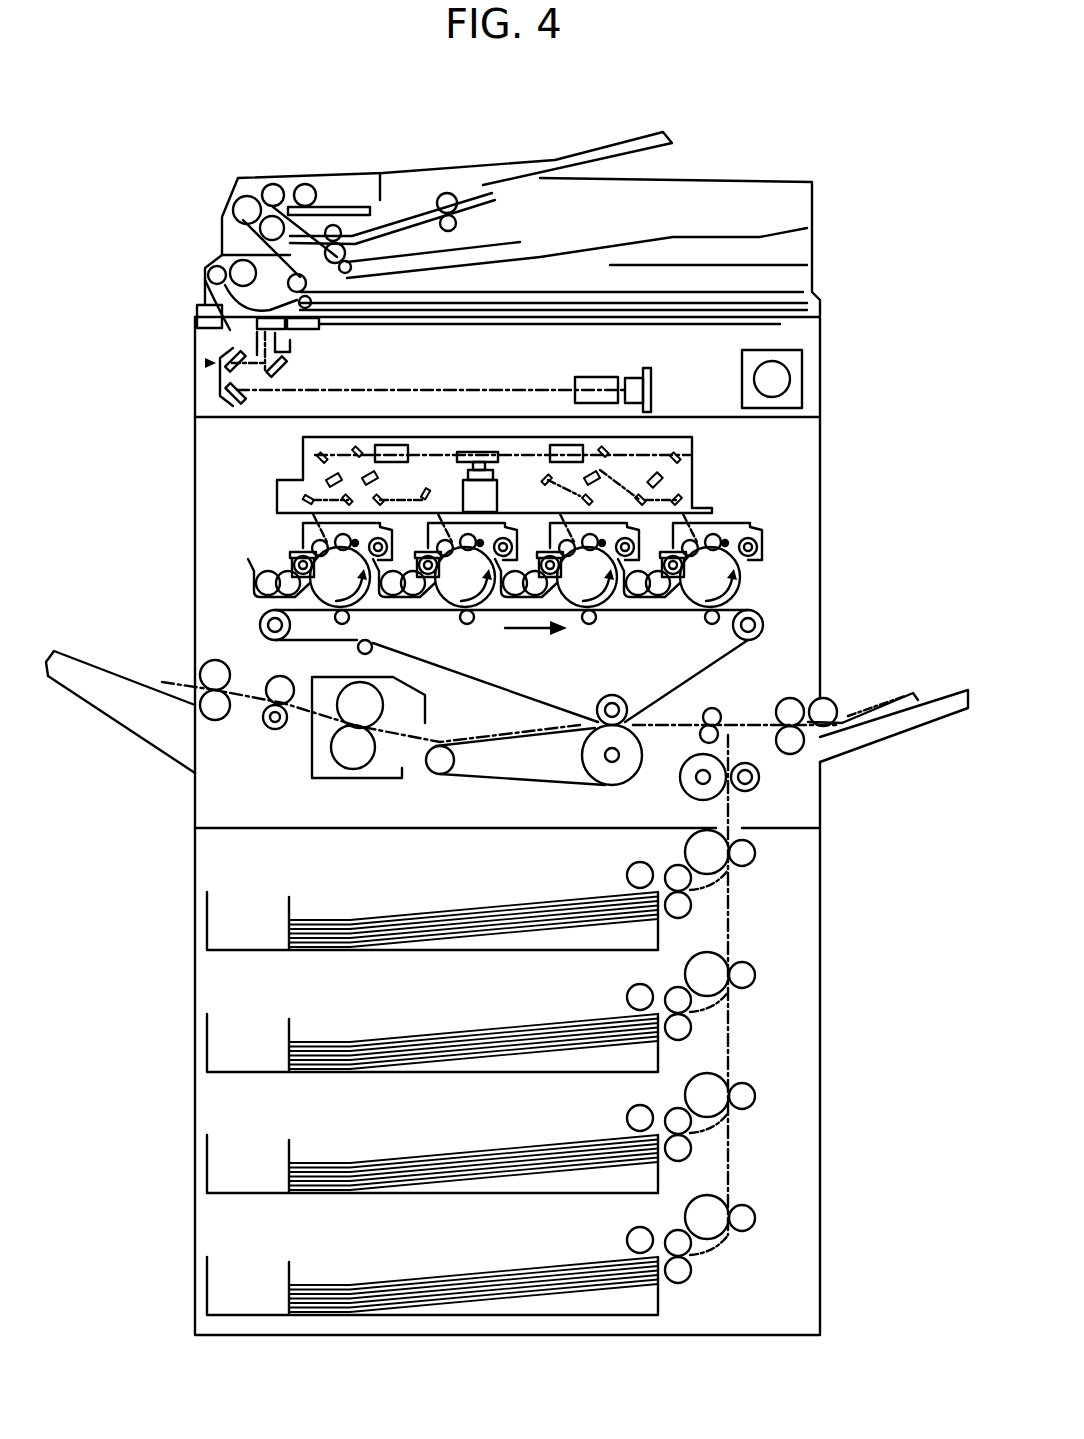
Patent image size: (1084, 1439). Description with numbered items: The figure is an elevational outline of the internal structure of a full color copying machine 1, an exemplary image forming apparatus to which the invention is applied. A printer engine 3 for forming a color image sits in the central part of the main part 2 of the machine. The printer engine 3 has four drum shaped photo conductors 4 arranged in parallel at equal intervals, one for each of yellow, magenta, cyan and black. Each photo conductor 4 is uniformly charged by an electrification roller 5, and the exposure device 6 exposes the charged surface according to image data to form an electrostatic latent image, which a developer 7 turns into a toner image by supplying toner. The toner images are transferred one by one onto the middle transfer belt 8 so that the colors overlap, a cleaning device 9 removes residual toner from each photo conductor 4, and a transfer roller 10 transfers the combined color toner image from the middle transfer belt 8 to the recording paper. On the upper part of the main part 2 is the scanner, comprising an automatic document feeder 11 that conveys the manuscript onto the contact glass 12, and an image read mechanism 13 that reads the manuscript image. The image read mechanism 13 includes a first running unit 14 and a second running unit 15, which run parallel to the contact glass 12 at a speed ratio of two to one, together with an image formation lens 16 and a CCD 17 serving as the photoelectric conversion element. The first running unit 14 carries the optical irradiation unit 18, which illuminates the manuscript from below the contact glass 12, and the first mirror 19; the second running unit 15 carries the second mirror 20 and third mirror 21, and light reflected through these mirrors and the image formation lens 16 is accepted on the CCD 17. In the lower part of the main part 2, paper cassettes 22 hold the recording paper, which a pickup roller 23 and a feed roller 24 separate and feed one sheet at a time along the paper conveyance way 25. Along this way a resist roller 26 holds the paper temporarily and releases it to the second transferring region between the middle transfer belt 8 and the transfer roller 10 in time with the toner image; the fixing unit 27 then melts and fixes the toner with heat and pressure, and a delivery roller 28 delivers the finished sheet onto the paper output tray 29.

The full color copying machine 1 is at (783, 114).
The main part 2 is at (195, 505).
The printer engine 3 is at (757, 596).
The photo conductor 4 is at (496, 584).
The electrification roller 5 is at (310, 535).
The exposure device 6 is at (695, 468).
The developer 7 is at (270, 558).
The middle transfer belt 8 is at (540, 690).
The cleaning device 9 is at (380, 600).
The transfer roller 10 is at (583, 755).
The automatic document feeder (ADF) 11 is at (402, 160).
The contact glass 12 is at (435, 328).
The image read mechanism 13 is at (205, 363).
The first running unit 14 is at (226, 330).
The second running unit 15 is at (222, 378).
The image formation lens 16 is at (578, 380).
The CCD 17 is at (653, 388).
The optical irradiation unit 18 is at (293, 332).
The first mirror 19 is at (285, 370).
The second mirror 20 is at (228, 355).
The third mirror 21 is at (228, 402).
The paper cassette 22 is at (205, 925).
The pickup roller 23 is at (627, 875).
The feed roller 24 is at (712, 882).
The paper conveyance way 25 is at (735, 815).
The resist roller 26 is at (718, 714).
The fixing unit 27 is at (312, 762).
The delivery roller 28 is at (208, 660).
The paper output tray 29 is at (96, 655).